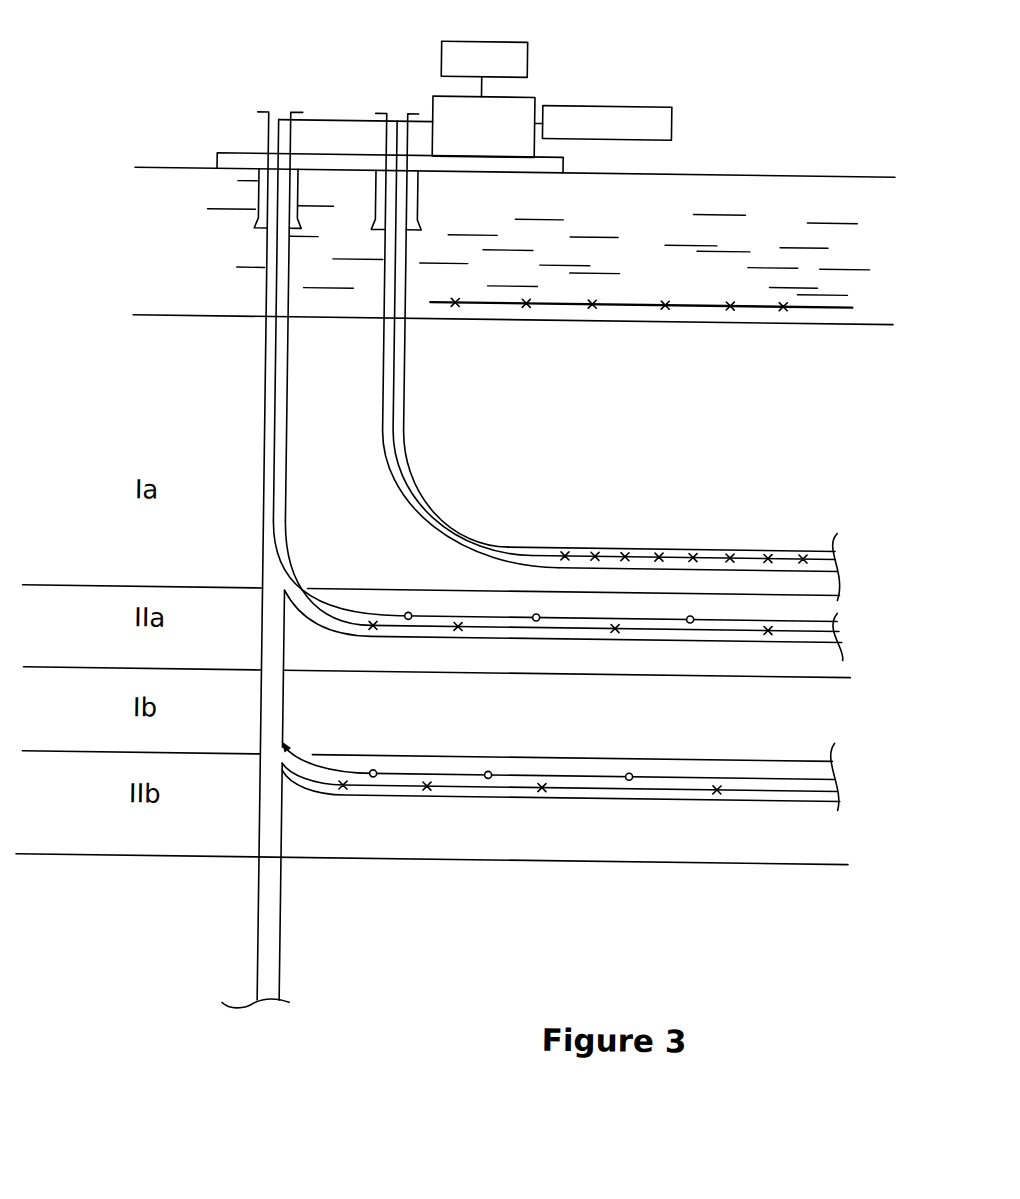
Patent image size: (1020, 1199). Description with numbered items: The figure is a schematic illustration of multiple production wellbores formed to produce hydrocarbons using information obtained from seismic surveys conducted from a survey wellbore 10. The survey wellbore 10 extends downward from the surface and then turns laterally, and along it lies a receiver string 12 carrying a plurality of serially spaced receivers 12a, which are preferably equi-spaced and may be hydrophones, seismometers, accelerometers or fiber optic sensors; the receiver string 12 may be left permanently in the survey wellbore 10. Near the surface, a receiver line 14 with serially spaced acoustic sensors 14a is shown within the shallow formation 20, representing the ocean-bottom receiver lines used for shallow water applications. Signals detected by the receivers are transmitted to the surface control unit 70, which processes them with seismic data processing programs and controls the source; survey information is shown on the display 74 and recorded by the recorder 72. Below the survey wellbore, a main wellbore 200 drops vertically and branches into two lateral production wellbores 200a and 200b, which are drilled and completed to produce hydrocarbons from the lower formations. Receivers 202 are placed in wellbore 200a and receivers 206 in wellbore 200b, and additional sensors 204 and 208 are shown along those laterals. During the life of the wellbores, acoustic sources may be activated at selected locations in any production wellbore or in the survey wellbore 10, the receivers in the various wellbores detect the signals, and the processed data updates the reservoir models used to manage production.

The display 74 is at (511, 39).
The surface control unit 70 is at (437, 91).
The recorder 72 is at (651, 101).
The formation 20 is at (659, 265).
The receiver line 14 is at (639, 303).
The acoustic sensors 14a is at (667, 297).
The main wellbore 200 is at (266, 378).
The survey wellbore 10 is at (406, 403).
The receiver string 12 is at (640, 549).
The receivers 12a is at (735, 552).
The production wellbore 200a is at (736, 635).
The sensors 204 is at (542, 617).
The receivers 202 is at (774, 627).
The production wellbore 200b is at (565, 786).
The sensors 208 is at (637, 769).
The receivers 206 is at (725, 787).